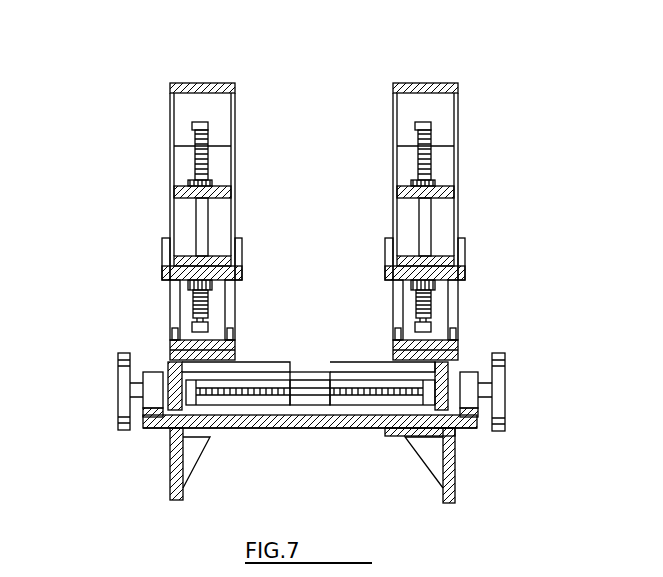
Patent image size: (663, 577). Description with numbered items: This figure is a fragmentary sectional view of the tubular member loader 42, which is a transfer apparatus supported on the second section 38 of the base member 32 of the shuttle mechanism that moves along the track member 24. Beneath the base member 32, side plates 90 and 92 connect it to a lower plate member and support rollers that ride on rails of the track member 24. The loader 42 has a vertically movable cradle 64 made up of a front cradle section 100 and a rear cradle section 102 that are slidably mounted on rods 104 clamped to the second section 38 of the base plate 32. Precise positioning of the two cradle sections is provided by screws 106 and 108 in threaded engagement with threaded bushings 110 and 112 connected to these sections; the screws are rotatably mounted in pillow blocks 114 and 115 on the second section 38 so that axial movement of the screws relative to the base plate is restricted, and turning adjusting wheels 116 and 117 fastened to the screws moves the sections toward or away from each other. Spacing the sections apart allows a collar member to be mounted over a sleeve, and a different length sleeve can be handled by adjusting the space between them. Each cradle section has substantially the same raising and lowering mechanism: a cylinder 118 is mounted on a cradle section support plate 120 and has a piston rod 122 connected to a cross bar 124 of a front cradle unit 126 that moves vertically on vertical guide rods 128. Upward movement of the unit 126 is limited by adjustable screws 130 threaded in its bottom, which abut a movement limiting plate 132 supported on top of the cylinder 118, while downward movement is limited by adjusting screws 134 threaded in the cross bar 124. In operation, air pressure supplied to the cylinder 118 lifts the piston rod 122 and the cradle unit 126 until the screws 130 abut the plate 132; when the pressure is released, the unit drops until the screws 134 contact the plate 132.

The tubular member loader 42 is at (419, 68).
The rear cradle section 102 is at (185, 88).
The vertically movable cradle 64 is at (173, 204).
The front cradle section 100 is at (461, 77).
The front cradle unit 126 is at (459, 210).
The adjusting screws 134 is at (473, 151).
The cross bar 124 is at (398, 163).
The piston rod 122 is at (387, 221).
The movement limiting plate 132 is at (489, 250).
The vertical guide rods 128 is at (430, 263).
The adjustable screws 130 is at (498, 280).
The cylinder 118 is at (470, 311).
The cradle section support plate 120 is at (373, 308).
The threaded bushing 112 is at (168, 372).
The pillow block 115 is at (153, 381).
The adjusting wheel 116 is at (118, 388).
The screw 106 is at (250, 385).
The rods 104 is at (308, 388).
The screw 108 is at (365, 372).
The threaded bushing 110 is at (448, 390).
The pillow block 114 is at (502, 367).
The adjusting wheel 117 is at (495, 391).
The base member 32 is at (330, 428).
The second section 38 is at (285, 428).
The side plate 90 is at (172, 482).
The side plate 92 is at (452, 480).
The track member 24 is at (452, 447).